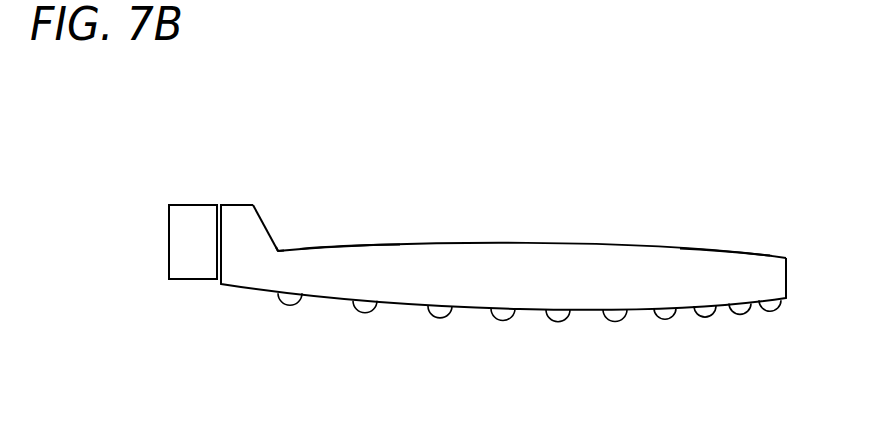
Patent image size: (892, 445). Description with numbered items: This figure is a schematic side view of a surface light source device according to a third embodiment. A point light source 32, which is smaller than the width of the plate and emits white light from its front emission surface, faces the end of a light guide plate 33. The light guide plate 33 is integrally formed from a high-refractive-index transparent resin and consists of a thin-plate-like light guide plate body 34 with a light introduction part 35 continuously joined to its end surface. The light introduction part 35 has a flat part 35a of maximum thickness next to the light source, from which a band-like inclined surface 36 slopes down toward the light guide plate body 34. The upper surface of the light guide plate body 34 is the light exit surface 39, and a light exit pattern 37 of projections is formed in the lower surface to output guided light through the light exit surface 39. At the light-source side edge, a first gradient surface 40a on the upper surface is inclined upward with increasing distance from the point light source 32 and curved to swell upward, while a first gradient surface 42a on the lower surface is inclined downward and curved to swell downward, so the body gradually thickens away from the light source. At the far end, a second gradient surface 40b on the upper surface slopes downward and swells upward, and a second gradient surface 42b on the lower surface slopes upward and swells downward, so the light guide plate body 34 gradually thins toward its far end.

The point light source 32 is at (190, 228).
The light introduction part 35 is at (250, 263).
The flat part 35a is at (241, 205).
The inclined surface 36 is at (274, 240).
The light exit surface 39 is at (540, 242).
The first gradient surface 40a is at (380, 242).
The second gradient surface 40b is at (725, 250).
The first gradient surface 42a is at (337, 305).
The light guide plate body 34 is at (472, 288).
The light exit pattern 37 is at (612, 315).
The light guide plate 33 is at (682, 290).
The second gradient surface 42b is at (742, 307).